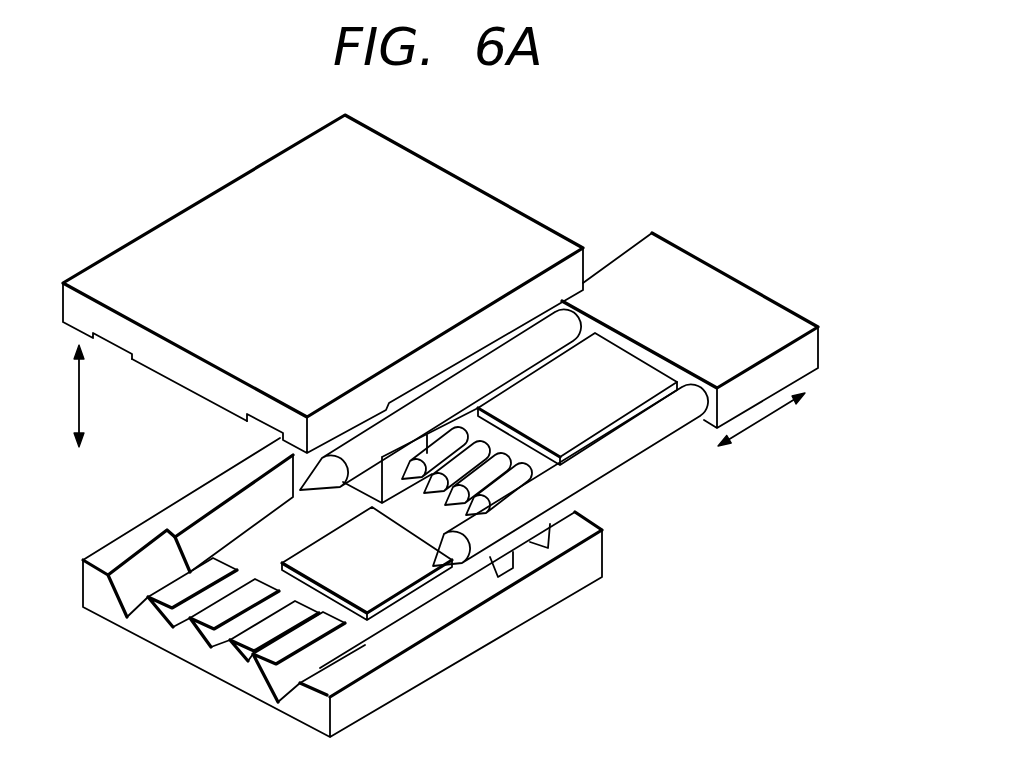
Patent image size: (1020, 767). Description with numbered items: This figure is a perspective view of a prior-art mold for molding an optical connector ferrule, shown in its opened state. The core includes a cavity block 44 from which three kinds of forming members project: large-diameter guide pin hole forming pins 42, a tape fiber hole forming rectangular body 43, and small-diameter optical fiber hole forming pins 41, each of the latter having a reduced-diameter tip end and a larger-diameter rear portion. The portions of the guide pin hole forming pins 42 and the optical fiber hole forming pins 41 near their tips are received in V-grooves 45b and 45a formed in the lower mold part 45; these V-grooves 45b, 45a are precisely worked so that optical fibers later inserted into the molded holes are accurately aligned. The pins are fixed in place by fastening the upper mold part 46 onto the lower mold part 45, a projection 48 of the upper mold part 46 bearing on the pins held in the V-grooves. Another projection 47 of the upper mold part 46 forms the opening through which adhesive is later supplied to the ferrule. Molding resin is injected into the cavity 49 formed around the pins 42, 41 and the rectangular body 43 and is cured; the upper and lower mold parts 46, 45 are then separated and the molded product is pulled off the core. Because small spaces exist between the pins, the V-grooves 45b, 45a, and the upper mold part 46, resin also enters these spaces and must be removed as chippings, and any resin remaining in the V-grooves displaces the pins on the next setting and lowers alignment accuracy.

The optical fiber hole forming pins 41 is at (495, 527).
The guide pin hole forming pins 42 is at (478, 477).
The tape fiber hole forming rectangular body 43 is at (578, 405).
The cavity block 44 is at (806, 356).
The lower mold part 45 is at (593, 550).
The V-grooves 45a is at (132, 590).
The V-grooves 45b is at (220, 640).
The upper mold part 46 is at (203, 227).
The projection 47 is at (362, 582).
The projection 48 is at (182, 393).
The cavity 49 is at (257, 547).